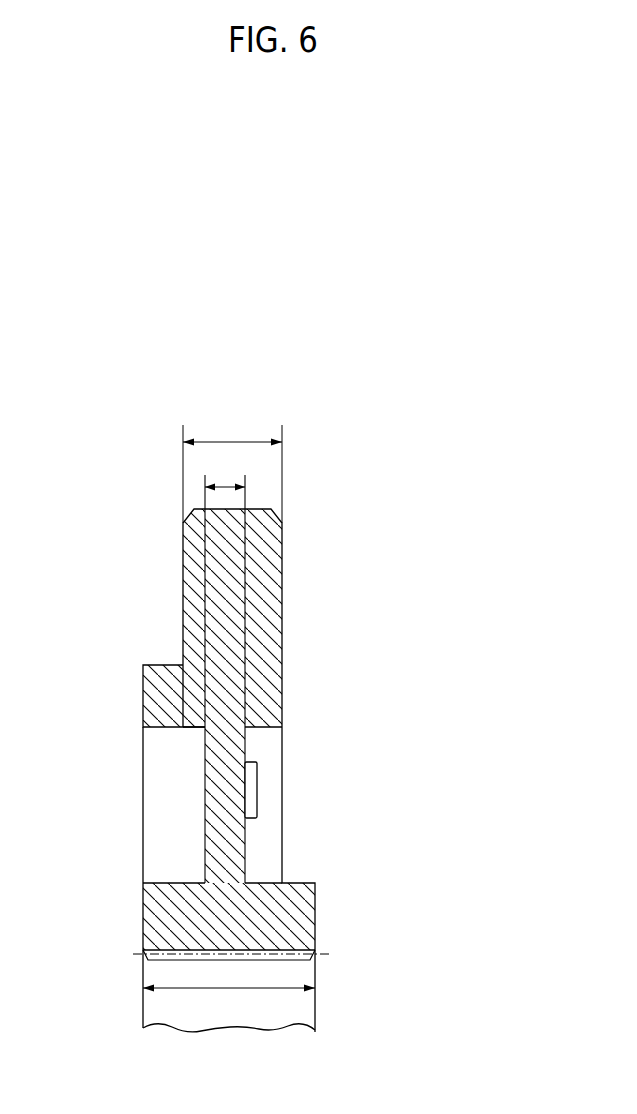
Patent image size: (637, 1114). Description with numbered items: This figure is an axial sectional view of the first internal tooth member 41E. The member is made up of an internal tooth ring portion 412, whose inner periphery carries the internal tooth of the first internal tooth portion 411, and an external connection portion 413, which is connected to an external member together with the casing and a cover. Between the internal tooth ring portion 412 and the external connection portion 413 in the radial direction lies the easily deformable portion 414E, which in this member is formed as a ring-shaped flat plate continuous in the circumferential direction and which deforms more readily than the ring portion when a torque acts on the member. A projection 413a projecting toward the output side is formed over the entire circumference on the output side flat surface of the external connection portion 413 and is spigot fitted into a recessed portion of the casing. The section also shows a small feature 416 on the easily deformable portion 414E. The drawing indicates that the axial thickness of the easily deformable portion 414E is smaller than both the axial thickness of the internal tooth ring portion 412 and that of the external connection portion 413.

The first internal tooth member 41E is at (424, 460).
The first internal tooth portion 411 is at (153, 960).
The internal tooth ring portion 412 is at (315, 913).
The external connection portion 413 is at (276, 570).
The projection 413a is at (162, 678).
The easily deformable portion 414E is at (207, 805).
The protrusion 416 is at (257, 782).